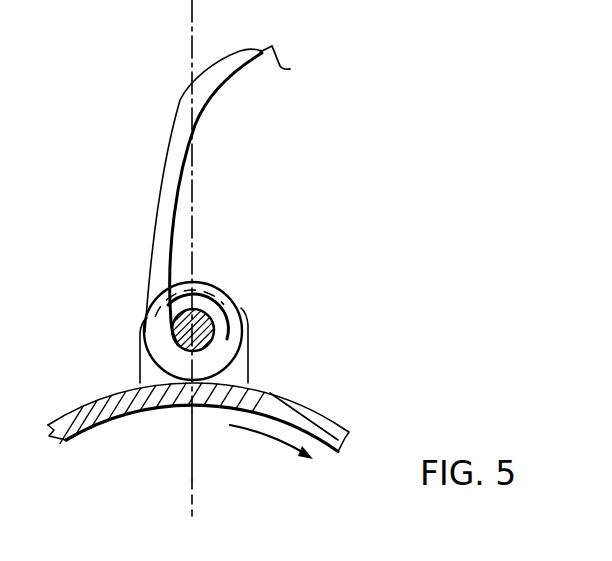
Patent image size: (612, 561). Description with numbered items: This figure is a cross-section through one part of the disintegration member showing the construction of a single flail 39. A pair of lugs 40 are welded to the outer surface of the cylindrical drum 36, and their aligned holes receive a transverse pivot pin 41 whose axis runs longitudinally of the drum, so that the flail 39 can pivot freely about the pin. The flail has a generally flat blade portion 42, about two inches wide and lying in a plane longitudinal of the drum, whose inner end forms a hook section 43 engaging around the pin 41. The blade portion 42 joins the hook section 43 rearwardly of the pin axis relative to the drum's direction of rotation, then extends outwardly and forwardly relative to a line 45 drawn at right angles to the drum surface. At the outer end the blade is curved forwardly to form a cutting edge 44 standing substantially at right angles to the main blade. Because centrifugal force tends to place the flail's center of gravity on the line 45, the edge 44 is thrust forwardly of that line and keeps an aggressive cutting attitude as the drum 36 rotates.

The cylindrical drum 36 is at (307, 400).
The flail 39 is at (192, 213).
The lugs 40 is at (150, 367).
The pivot pin 41 is at (240, 323).
The blade portion 42 is at (158, 210).
The hook section 43 is at (219, 350).
The cutting edge 44 is at (293, 67).
The line at right angles to the drum surface 45 is at (190, 40).